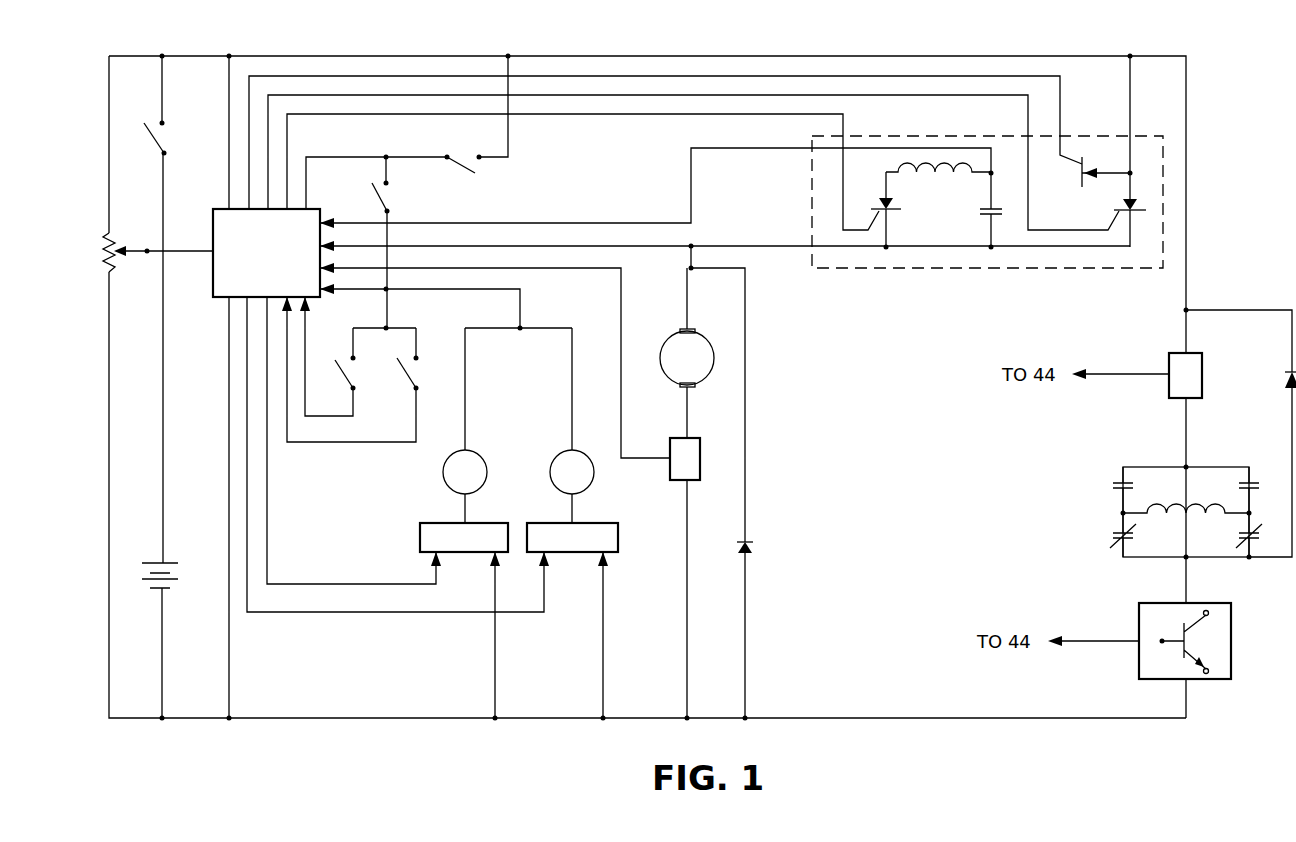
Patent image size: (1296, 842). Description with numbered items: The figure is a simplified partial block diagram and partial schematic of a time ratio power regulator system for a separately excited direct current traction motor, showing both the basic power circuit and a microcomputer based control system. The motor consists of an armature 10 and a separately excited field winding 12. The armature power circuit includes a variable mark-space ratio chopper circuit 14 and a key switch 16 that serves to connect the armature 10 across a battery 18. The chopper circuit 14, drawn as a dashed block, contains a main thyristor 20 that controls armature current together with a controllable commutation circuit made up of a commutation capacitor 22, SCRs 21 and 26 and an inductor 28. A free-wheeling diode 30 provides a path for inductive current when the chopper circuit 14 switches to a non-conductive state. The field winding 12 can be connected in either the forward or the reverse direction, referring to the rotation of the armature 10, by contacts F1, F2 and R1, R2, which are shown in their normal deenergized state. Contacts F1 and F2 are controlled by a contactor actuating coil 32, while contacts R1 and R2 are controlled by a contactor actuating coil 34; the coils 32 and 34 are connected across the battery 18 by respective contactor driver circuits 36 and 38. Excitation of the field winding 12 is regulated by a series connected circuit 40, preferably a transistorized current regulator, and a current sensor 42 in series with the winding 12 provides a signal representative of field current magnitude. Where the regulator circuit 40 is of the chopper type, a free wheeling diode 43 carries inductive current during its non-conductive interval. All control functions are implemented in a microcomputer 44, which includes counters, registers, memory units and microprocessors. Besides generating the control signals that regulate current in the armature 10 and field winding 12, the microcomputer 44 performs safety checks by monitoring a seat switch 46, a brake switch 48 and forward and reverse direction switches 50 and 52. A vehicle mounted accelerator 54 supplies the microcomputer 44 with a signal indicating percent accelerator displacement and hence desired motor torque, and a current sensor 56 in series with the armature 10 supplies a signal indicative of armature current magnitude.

The armature 10 is at (665, 334).
The field winding 12 is at (1206, 502).
The chopper circuit 14 is at (910, 280).
The key switch 16 is at (177, 135).
The battery 18 is at (172, 558).
The main thyristor 20 is at (1111, 206).
The SCR 21 is at (1070, 180).
The commutation capacitor 22 is at (979, 224).
The SCR 26 is at (902, 211).
The inductor 28 is at (912, 180).
The free-wheeling diode 30 is at (750, 542).
The contactor actuating coil 32 is at (485, 455).
The contactor actuating coil 34 is at (559, 456).
The contactor driver circuit 36 is at (506, 518).
The contactor driver circuit 38 is at (600, 518).
The series connected circuit 40 is at (1232, 661).
The current sensor 42 is at (1216, 368).
The free wheeling diode 43 is at (1280, 387).
The microcomputer 44 is at (218, 204).
The seat switch 46 is at (486, 175).
The brake switch 48 is at (390, 196).
The forward direction switch 50 is at (380, 380).
The reverse direction switch 52 is at (440, 379).
The accelerator 54 is at (128, 236).
The current sensor 56 is at (702, 434).
The forward contact F1 is at (1106, 486).
The forward contact F2 is at (1108, 535).
The reverse contact R1 is at (1258, 486).
The reverse contact R2 is at (1268, 542).